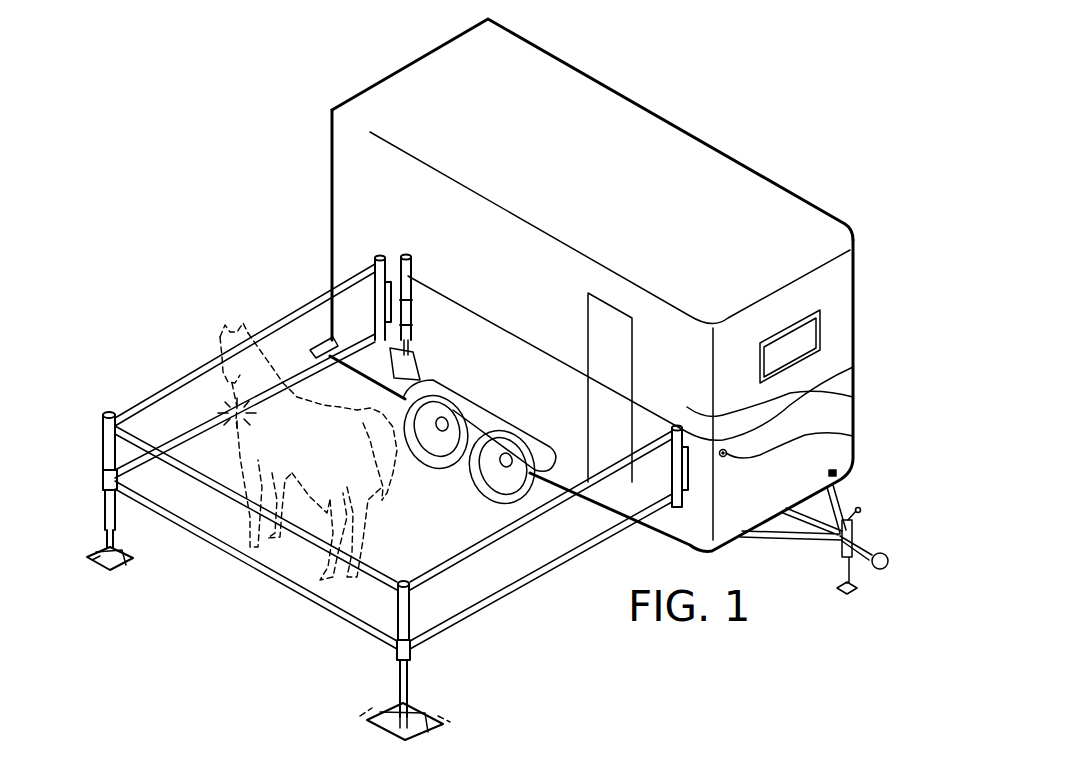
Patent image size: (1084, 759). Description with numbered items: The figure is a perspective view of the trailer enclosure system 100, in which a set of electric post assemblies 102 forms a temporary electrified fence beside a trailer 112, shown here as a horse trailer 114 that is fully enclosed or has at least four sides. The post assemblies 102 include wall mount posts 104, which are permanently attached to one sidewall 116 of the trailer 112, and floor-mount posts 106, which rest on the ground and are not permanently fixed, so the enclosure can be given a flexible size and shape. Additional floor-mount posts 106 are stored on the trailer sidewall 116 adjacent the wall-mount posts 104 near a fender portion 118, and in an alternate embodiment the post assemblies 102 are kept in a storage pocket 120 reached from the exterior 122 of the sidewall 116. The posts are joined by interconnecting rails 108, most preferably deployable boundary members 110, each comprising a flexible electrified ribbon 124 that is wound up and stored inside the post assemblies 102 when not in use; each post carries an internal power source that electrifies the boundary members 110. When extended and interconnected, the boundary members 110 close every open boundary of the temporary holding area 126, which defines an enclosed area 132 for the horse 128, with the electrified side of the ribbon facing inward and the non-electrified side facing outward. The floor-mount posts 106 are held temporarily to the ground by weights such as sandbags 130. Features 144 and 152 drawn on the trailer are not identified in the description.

The trailer enclosure system 100 is at (290, 660).
The electric post assemblies 102 is at (107, 393).
The wall mount posts 104 is at (378, 256).
The floor-mount posts 106 is at (405, 255).
The interconnecting rails 108 is at (292, 288).
The deployable boundary members 110 is at (227, 408).
The trailer 112 is at (332, 112).
The horse trailer 114 is at (592, 52).
The sidewall 116 is at (510, 273).
The fender portion 118 is at (420, 380).
The storage pocket 120 is at (614, 308).
The exterior 122 is at (853, 397).
The electrified ribbon 124 is at (303, 600).
The temporary holding area 126 is at (175, 572).
The horse 128 is at (232, 322).
The sandbags 130 is at (430, 728).
The enclosed area 132 is at (405, 496).
The hitch bracket 144 is at (835, 478).
The power connector 152 is at (853, 436).